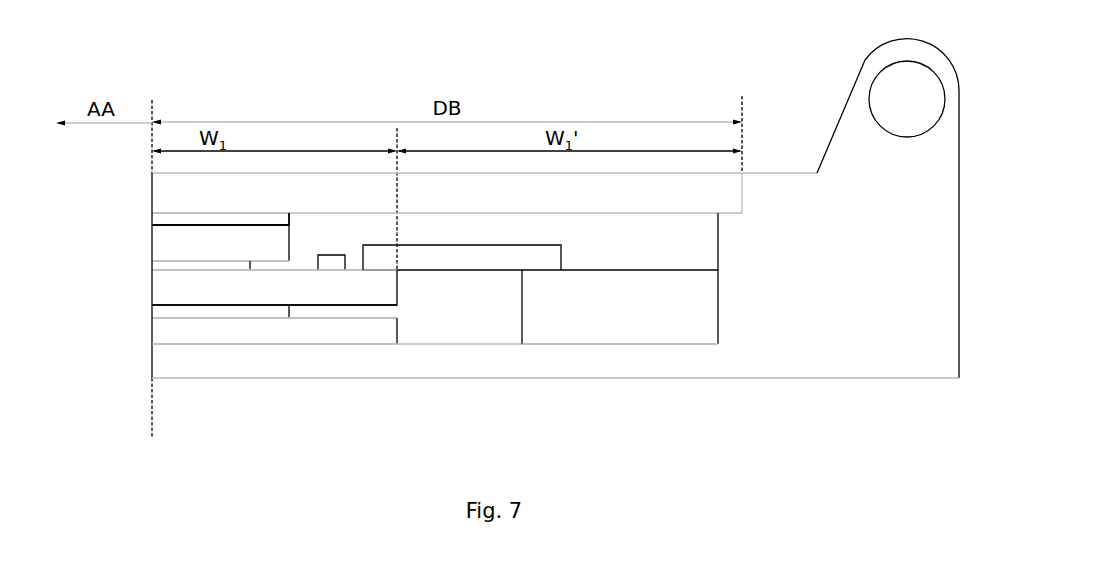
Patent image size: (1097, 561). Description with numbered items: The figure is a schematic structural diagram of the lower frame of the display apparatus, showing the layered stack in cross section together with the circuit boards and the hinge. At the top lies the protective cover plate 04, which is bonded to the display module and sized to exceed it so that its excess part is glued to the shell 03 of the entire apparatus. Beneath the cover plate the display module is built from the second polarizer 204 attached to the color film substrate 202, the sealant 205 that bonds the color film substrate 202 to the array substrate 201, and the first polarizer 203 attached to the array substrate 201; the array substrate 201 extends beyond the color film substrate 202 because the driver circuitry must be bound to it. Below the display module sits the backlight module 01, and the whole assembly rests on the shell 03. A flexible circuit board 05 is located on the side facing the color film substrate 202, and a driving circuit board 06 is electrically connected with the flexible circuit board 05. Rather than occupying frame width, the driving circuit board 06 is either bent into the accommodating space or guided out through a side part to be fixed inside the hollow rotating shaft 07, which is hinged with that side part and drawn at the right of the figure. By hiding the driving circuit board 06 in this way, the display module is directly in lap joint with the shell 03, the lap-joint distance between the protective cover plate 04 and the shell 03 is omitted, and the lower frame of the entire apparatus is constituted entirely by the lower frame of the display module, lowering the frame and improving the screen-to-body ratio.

The protective cover plate 04 is at (162, 191).
The second polarizer 204 is at (165, 217).
The color film substrate 202 is at (162, 243).
The sealant 205 is at (163, 265).
The array substrate 201 is at (162, 280).
The first polarizer 203 is at (162, 310).
The backlight module 01 is at (162, 336).
The shell 03 is at (162, 363).
The flexible circuit board 05 is at (447, 255).
The driving circuit board 06 is at (609, 324).
The hollow rotating shaft 07 is at (890, 98).